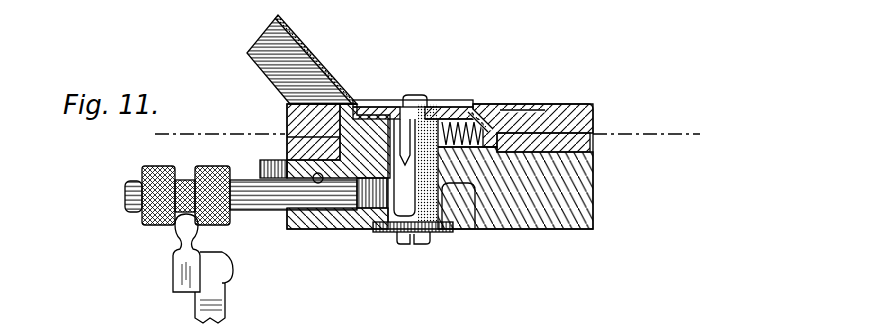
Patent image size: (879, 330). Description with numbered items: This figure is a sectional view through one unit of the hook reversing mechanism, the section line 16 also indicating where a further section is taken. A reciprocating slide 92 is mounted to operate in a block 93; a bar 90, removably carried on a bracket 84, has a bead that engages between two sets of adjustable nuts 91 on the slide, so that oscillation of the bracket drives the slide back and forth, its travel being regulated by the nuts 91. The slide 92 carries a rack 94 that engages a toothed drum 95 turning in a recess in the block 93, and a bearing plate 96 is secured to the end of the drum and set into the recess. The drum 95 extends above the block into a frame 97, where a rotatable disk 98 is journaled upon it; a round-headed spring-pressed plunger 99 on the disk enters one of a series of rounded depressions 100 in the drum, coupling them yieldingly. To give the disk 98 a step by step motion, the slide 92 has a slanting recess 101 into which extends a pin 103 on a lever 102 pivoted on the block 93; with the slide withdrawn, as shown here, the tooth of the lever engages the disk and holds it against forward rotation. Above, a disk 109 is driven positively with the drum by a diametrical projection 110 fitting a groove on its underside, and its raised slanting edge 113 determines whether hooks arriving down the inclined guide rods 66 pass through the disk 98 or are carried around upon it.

The axis line 16 is at (423, 138).
The inclined guide rods 66 is at (322, 72).
The bracket 84 is at (225, 301).
The bar 90 is at (175, 238).
The adjustable nuts 91 is at (142, 225).
The reciprocating slide 92 is at (125, 204).
The block 93 is at (590, 208).
The rack 94 is at (370, 208).
The toothed drum 95 is at (477, 233).
The bearing plate 96 is at (441, 233).
The frame 97 is at (593, 118).
The rotatable disk 98 is at (487, 101).
The spring-pressed plunger 99 is at (538, 103).
The depressions 100 is at (453, 100).
The recess 101 is at (305, 160).
The lever 102 is at (262, 164).
The pin 103 is at (345, 128).
The disk 109 is at (373, 104).
The diametrical projection 110 is at (420, 100).
The raised slanting edge 113 is at (441, 104).